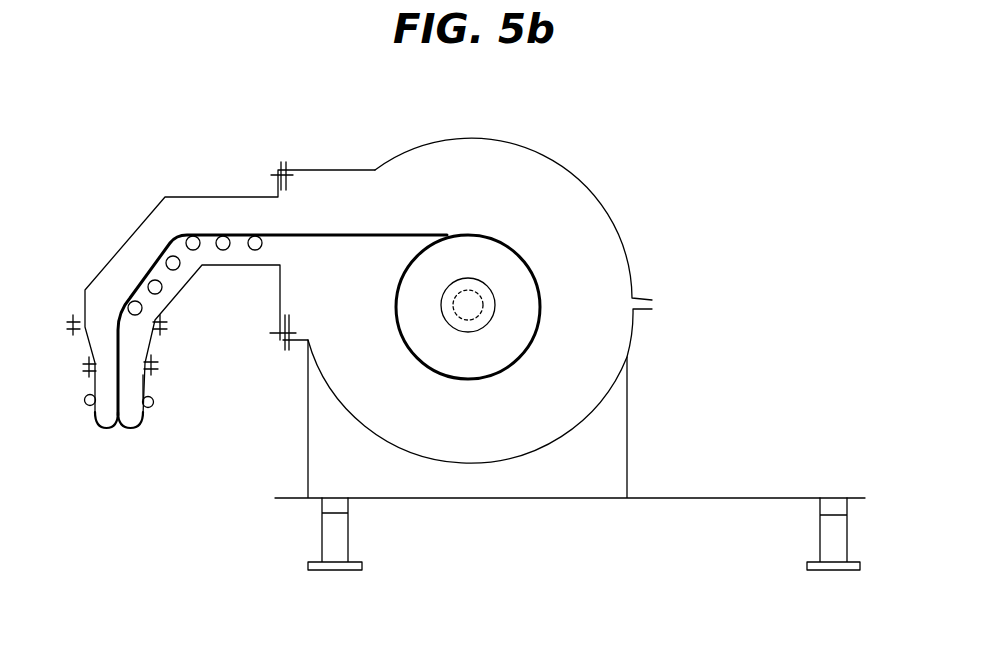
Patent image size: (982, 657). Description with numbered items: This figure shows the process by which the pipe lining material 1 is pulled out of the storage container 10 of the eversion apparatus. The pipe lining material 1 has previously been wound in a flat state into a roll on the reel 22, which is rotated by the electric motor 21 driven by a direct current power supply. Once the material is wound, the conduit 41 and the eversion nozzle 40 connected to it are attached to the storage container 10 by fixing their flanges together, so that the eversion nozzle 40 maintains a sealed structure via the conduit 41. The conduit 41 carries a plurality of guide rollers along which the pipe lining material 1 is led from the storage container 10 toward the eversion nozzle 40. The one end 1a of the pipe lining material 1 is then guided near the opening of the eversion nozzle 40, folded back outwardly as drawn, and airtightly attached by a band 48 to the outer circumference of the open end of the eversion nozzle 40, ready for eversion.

The pipe lining material 1 is at (238, 232).
The one end of the pipe lining material 1a is at (128, 428).
The storage container 10 is at (520, 148).
The electric motor 21 is at (447, 322).
The reel 22 is at (453, 302).
The eversion nozzle 40 is at (143, 388).
The conduit 41 is at (123, 243).
The band 48 is at (152, 407).